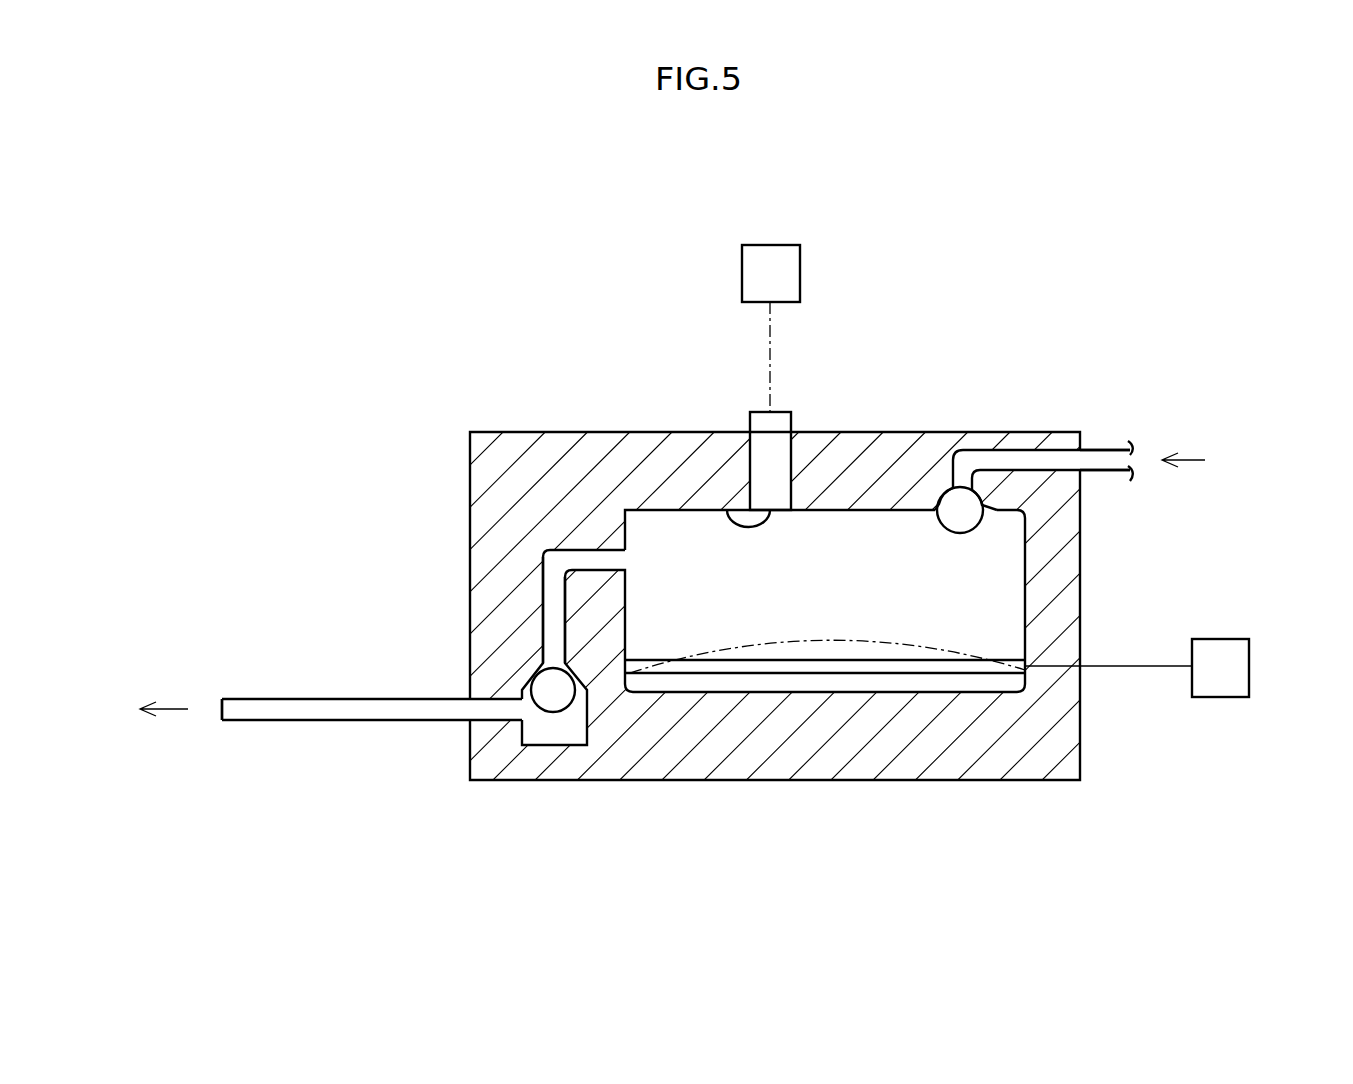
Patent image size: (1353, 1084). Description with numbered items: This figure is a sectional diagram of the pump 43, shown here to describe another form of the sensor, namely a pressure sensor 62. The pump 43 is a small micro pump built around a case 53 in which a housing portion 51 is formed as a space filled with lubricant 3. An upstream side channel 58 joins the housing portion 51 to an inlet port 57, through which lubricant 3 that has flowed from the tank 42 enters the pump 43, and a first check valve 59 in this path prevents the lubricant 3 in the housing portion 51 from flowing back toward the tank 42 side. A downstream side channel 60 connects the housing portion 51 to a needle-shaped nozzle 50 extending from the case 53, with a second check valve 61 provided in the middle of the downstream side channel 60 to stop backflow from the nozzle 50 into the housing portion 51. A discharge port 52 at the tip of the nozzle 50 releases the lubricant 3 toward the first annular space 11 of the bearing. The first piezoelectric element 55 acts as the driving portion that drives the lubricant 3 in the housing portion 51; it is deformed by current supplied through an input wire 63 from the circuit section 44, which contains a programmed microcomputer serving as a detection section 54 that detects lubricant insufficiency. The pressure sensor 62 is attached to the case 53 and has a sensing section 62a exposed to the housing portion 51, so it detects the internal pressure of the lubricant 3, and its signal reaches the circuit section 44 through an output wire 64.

The lubricant 3 is at (832, 602).
The first annular space 11 is at (117, 725).
The tank 42 is at (1262, 478).
The pump 43 is at (936, 418).
The circuit section 44 is at (801, 226).
The nozzle 50 is at (282, 710).
The housing portion 51 is at (670, 550).
The discharge port 52 is at (220, 710).
The case 53 is at (548, 505).
The detection section 54 is at (771, 273).
The first piezoelectric element 55 is at (829, 666).
The inlet port 57 is at (1095, 466).
The upstream side channel 58 is at (1036, 472).
The first check valve 59 is at (997, 532).
The downstream side channel 60 is at (553, 620).
The second check valve 61 is at (577, 727).
The pressure sensor 62 is at (780, 465).
The sensing section 62a is at (727, 510).
The input wire 63 is at (1135, 668).
The output wire 64 is at (772, 357).